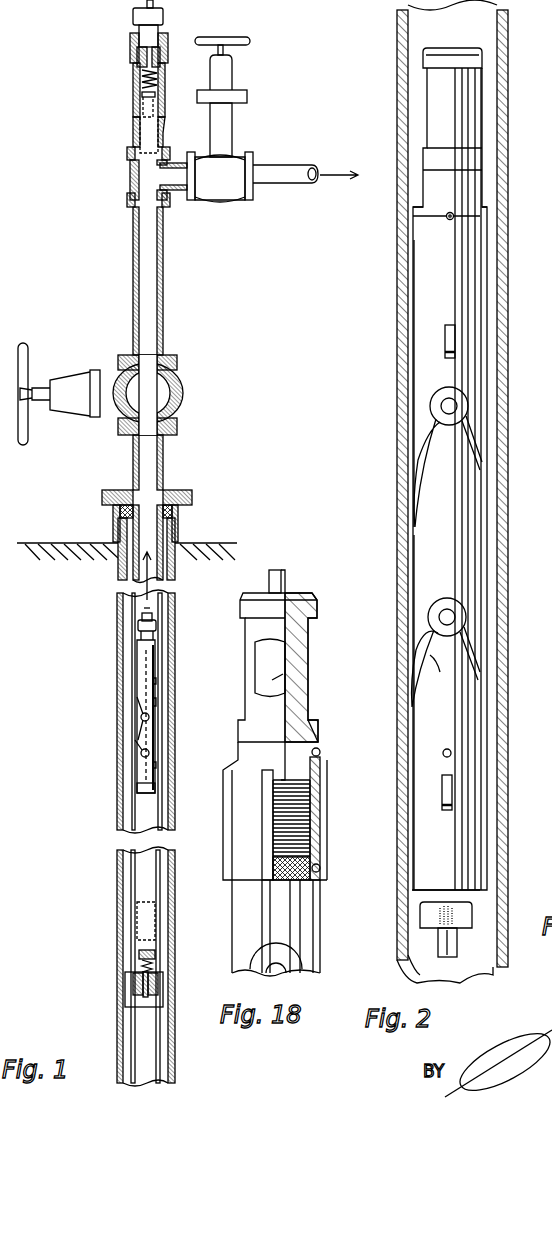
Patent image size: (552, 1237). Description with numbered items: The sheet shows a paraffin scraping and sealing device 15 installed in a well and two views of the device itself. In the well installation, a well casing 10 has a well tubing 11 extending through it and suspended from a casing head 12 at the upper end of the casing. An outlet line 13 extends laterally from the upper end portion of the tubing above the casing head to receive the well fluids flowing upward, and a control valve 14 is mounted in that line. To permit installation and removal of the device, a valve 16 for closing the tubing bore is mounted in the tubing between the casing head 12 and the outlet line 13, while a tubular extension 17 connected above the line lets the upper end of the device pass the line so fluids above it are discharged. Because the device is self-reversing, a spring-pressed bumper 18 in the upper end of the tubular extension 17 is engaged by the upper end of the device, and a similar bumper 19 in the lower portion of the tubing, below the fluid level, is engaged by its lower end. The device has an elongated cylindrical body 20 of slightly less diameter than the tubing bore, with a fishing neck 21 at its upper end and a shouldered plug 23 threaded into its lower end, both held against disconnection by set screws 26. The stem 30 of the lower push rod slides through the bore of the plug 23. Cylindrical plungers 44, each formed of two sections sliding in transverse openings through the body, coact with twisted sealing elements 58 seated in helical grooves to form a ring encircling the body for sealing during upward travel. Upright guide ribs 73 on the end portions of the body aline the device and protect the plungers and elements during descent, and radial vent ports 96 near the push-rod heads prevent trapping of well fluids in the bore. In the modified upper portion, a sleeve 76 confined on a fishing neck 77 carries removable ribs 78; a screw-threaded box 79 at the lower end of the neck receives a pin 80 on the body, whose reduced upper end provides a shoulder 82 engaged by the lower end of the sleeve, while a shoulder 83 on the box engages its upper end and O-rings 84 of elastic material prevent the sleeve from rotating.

In FIG. 1, the well casing 10 is at (117, 745).
In FIG. 1, the well tubing 11 is at (163, 285).
In FIG. 2, the well tubing 11 is at (508, 605).
In FIG. 1, the casing head 12 is at (178, 523).
In FIG. 1, the outlet line 13 is at (292, 183).
In FIG. 1, the control valve 14 is at (232, 128).
In FIG. 1, the paraffin scraping and sealing device 15 is at (137, 660).
In FIG. 2, the paraffin scraping and sealing device 15 is at (524, 248).
In FIG. 1, the valve 16 is at (183, 395).
In FIG. 1, the tubular extension 17 is at (133, 103).
In FIG. 1, the spring-pressed bumper 18 is at (137, 60).
In FIG. 1, the bumper 19 is at (125, 990).
In FIG. 1, the body 20 is at (148, 725).
In FIG. 2, the body 20 is at (420, 560).
In FIG. 1, the fishing neck 21 is at (155, 626).
In FIG. 2, the fishing neck 21 is at (482, 62).
In FIG. 1, the plug 23 is at (137, 790).
In FIG. 2, the plug 23 is at (472, 918).
In FIG. 2, the set screws 26 is at (448, 220).
In FIG. 2, the stem 30 is at (440, 958).
In FIG. 2, the plunger 44 is at (445, 390).
In FIG. 2, the sealing element 58 is at (440, 676).
In FIG. 2, the guide ribs 73 is at (444, 335).
In FIG. 18, the sleeve 76 is at (240, 850).
In FIG. 18, the fishing neck 77 is at (308, 670).
In FIG. 18, the ribs 78 is at (320, 840).
In FIG. 18, the screw-threaded box 79 is at (310, 805).
In FIG. 18, the pin 80 is at (275, 810).
In FIG. 18, the shoulder 82 is at (320, 882).
In FIG. 18, the shoulder 83 is at (318, 738).
In FIG. 18, the O-rings 84 is at (320, 754).
In FIG. 2, the vent ports 96 is at (443, 752).